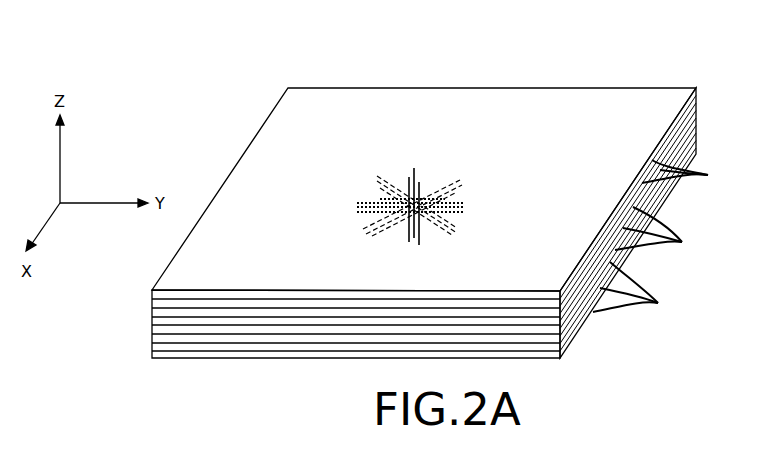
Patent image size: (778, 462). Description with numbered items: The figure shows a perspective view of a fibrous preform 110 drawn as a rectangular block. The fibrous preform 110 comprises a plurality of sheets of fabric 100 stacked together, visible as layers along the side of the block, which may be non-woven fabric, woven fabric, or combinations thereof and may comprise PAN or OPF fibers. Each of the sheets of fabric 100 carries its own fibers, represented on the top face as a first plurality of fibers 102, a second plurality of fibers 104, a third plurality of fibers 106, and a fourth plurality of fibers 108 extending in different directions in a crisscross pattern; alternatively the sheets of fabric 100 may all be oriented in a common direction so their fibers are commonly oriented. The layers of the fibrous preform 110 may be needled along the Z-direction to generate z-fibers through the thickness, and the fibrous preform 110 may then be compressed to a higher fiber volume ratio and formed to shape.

The sheets of fabric 100 is at (670, 243).
The first plurality of fibers 102 is at (458, 180).
The second plurality of fibers 104 is at (370, 188).
The third plurality of fibers 106 is at (467, 207).
The fourth plurality of fibers 108 is at (415, 173).
The fibrous preform 110 is at (226, 82).